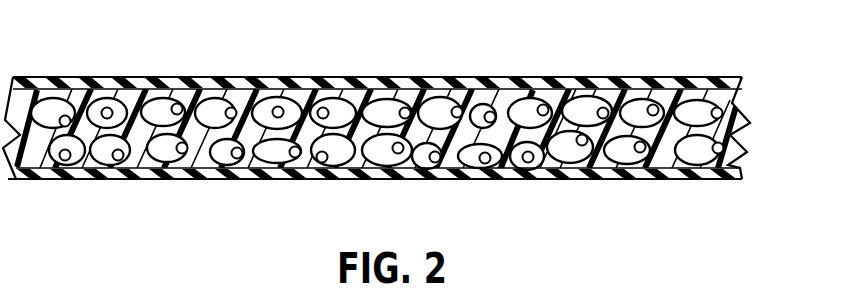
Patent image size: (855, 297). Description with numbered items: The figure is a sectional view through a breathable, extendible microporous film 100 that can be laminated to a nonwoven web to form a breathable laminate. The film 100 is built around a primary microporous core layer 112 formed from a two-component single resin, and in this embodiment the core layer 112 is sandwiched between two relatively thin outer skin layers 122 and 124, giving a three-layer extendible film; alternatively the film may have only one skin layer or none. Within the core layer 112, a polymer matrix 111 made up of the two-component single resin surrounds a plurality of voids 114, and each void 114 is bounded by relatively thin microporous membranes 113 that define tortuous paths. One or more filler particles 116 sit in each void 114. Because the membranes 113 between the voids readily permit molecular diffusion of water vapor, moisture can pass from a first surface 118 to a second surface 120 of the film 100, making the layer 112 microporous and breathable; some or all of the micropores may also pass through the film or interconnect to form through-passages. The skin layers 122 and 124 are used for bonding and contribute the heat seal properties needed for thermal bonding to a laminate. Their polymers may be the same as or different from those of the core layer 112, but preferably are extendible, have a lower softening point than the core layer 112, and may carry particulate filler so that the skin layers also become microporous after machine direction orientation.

The film 100 is at (407, 121).
The polymer matrix 111 is at (748, 132).
The primary microporous core layer 112 is at (378, 121).
The microporous membranes 113 is at (379, 118).
The voids 114 is at (457, 178).
The filler particles 116 is at (503, 158).
The first surface 118 is at (377, 49).
The second surface 120 is at (375, 201).
The skin layer 122 is at (190, 80).
The skin layer 124 is at (213, 180).